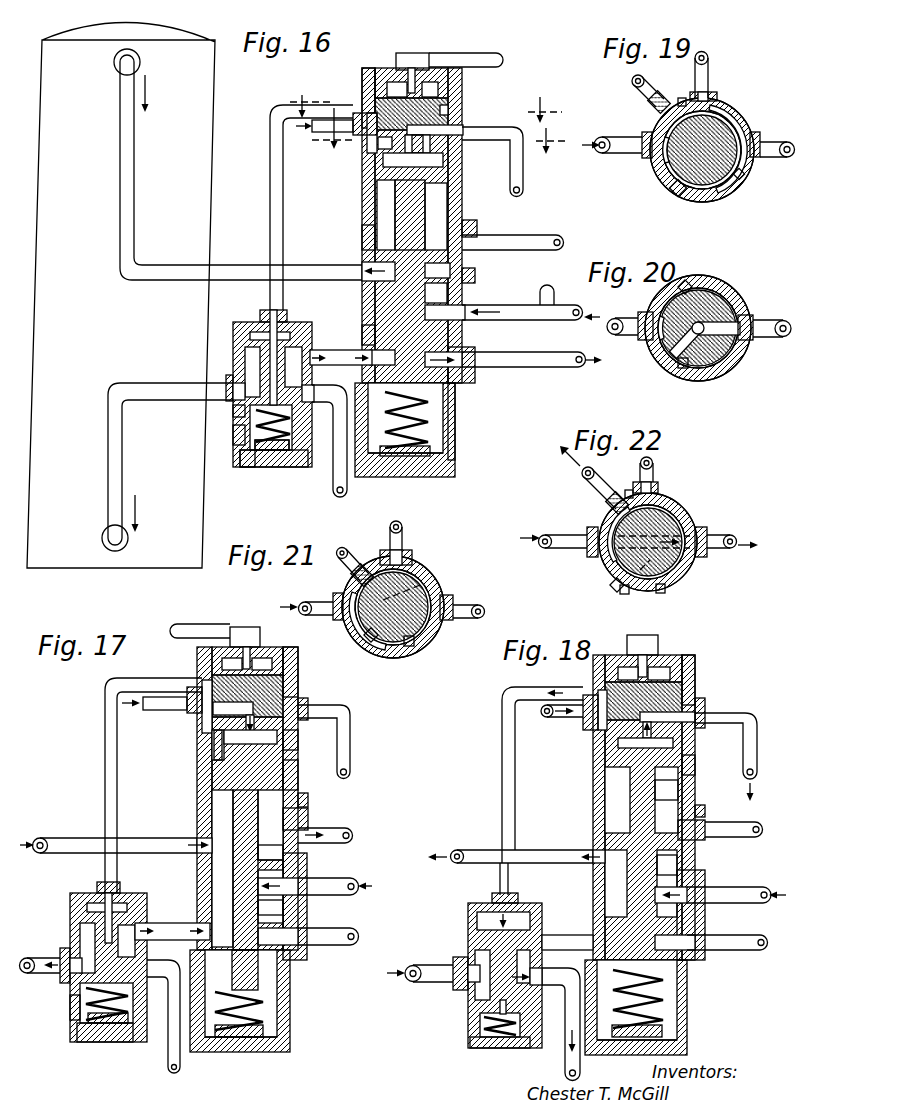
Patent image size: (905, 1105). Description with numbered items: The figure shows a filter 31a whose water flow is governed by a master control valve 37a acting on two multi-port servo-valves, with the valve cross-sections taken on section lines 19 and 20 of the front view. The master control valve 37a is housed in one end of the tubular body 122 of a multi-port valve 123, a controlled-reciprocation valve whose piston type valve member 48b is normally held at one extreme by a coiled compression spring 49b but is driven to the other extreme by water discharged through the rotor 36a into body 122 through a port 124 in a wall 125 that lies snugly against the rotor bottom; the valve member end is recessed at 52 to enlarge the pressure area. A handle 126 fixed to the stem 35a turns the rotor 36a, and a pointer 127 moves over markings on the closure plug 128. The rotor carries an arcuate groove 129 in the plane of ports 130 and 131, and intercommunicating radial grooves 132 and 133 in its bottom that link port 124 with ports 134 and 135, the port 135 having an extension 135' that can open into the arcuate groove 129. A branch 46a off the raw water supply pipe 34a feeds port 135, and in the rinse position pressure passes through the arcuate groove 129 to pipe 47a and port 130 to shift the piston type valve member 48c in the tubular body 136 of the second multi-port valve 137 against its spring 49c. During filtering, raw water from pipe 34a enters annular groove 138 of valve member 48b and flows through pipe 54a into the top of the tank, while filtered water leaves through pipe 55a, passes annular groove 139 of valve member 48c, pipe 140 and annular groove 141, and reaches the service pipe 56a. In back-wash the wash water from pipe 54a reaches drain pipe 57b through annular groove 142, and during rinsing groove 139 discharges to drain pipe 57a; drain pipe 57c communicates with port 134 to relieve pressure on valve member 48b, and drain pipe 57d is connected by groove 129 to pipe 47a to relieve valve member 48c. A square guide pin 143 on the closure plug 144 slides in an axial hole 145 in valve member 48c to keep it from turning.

In FIG. 16, the section line 19— 19 is at (420, 105).
In FIG. 16, the section line 20— 20 is at (437, 131).
In FIG. 16, the filter 31a is at (203, 233).
In FIG. 16, the raw water supply pipe 34a is at (527, 311).
In FIG. 17, the raw water supply pipe 34a is at (335, 885).
In FIG. 18, the raw water supply pipe 34a is at (732, 896).
In FIG. 16, the stem 35a is at (418, 74).
In FIG. 16, the rotor 36a is at (461, 93).
In FIG. 19, the rotor 36a is at (716, 186).
In FIG. 20, the rotor 36a is at (718, 371).
In FIG. 21, the rotor 36a is at (433, 638).
In FIG. 22, the rotor 36a is at (680, 581).
In FIG. 17, the rotor 36a is at (299, 680).
In FIG. 18, the rotor 36a is at (666, 661).
In FIG. 16, the master control valve 37a is at (373, 98).
In FIG. 19, the master control valve 37a is at (745, 113).
In FIG. 20, the master control valve 37a is at (721, 286).
In FIG. 21, the master control valve 37a is at (432, 568).
In FIG. 22, the master control valve 37a is at (682, 498).
In FIG. 17, the master control valve 37a is at (301, 691).
In FIG. 18, the master control valve 37a is at (698, 678).
In FIG. 16, the branch pipe 46a is at (317, 131).
In FIG. 19, the branch pipe 46a is at (620, 155).
In FIG. 20, the branch pipe 46a is at (622, 338).
In FIG. 21, the branch pipe 46a is at (315, 603).
In FIG. 22, the branch pipe 46a is at (556, 551).
In FIG. 17, the branch pipe 46a is at (146, 711).
In FIG. 18, the branch pipe 46a is at (559, 719).
In FIG. 16, the pipe 47a is at (284, 213).
In FIG. 19, the pipe 47a is at (646, 96).
In FIG. 22, the pipe 47a is at (590, 484).
In FIG. 17, the pipe 47a is at (107, 742).
In FIG. 18, the pipe 47a is at (500, 741).
In FIG. 16, the piston type valve member 48b is at (457, 384).
In FIG. 17, the piston type valve member 48b is at (303, 780).
In FIG. 18, the piston type valve member 48b is at (682, 766).
In FIG. 16, the piston type valve member 48c is at (300, 336).
In FIG. 17, the piston type valve member 48c is at (104, 897).
In FIG. 18, the piston type valve member 48c is at (470, 1014).
In FIG. 16, the coiled compression spring 49b is at (413, 450).
In FIG. 17, the coiled compression spring 49b is at (222, 1042).
In FIG. 18, the coiled compression spring 49b is at (667, 999).
In FIG. 16, the spring 49c is at (259, 461).
In FIG. 17, the spring 49c is at (78, 1040).
In FIG. 18, the spring 49c is at (480, 1049).
In FIG. 16, the recessed end 52 is at (395, 180).
In FIG. 17, the recessed end 52 is at (118, 902).
In FIG. 16, the pipe 54a is at (130, 197).
In FIG. 17, the pipe 54a is at (70, 850).
In FIG. 18, the pipe 54a is at (538, 850).
In FIG. 16, the pipe 55a is at (124, 460).
In FIG. 17, the pipe 55a is at (45, 958).
In FIG. 18, the pipe 55a is at (422, 965).
In FIG. 16, the service pipe 56a is at (521, 369).
In FIG. 17, the service pipe 56a is at (323, 947).
In FIG. 18, the service pipe 56a is at (727, 951).
In FIG. 16, the drain pipe 57a is at (329, 481).
In FIG. 17, the drain pipe 57a is at (166, 1042).
In FIG. 18, the drain pipe 57a is at (562, 1052).
In FIG. 16, the drain pipe 57b is at (527, 241).
In FIG. 17, the drain pipe 57b is at (348, 840).
In FIG. 18, the drain pipe 57b is at (753, 838).
In FIG. 16, the drain pipe 57c is at (526, 178).
In FIG. 19, the drain pipe 57c is at (775, 147).
In FIG. 20, the drain pipe 57c is at (771, 331).
In FIG. 22, the drain pipe 57c is at (727, 537).
In FIG. 17, the drain pipe 57c is at (352, 714).
In FIG. 18, the drain pipe 57c is at (757, 714).
In FIG. 19, the drain pipe 57d is at (710, 68).
In FIG. 21, the drain pipe 57d is at (404, 540).
In FIG. 22, the drain pipe 57d is at (656, 470).
In FIG. 16, the tubular body 122 is at (364, 237).
In FIG. 19, the tubular body 122 is at (680, 190).
In FIG. 20, the tubular body 122 is at (691, 280).
In FIG. 22, the tubular body 122 is at (617, 586).
In FIG. 16, the multi-port valve 123 is at (465, 213).
In FIG. 17, the multi-port valve 123 is at (197, 796).
In FIG. 16, the port 124 is at (390, 164).
In FIG. 20, the port 124 is at (683, 369).
In FIG. 21, the port 124 is at (411, 646).
In FIG. 22, the port 124 is at (661, 590).
In FIG. 17, the port 124 is at (240, 733).
In FIG. 18, the port 124 is at (689, 749).
In FIG. 16, the wall 125 is at (386, 138).
In FIG. 17, the wall 125 is at (299, 741).
In FIG. 16, the handle 126 is at (474, 56).
In FIG. 17, the handle 126 is at (190, 633).
In FIG. 16, the pointer 127 is at (405, 45).
In FIG. 16, the closure plug 128 is at (459, 76).
In FIG. 19, the closure plug 128 is at (742, 179).
In FIG. 16, the arcuate groove 129 is at (449, 112).
In FIG. 21, the arcuate groove 129 is at (372, 637).
In FIG. 22, the arcuate groove 129 is at (625, 591).
In FIG. 18, the arcuate groove 129 is at (625, 660).
In FIG. 19, the port 130 is at (683, 98).
In FIG. 22, the port 130 is at (628, 490).
In FIG. 19, the port 131 is at (712, 101).
In FIG. 16, the radial groove 132 is at (446, 153).
In FIG. 20, the radial groove 132 is at (721, 346).
In FIG. 21, the radial groove 132 is at (370, 565).
In FIG. 17, the radial groove 132 is at (212, 722).
In FIG. 20, the radial groove 133 is at (672, 356).
In FIG. 21, the radial groove 133 is at (448, 589).
In FIG. 22, the radial groove 133 is at (694, 569).
In FIG. 18, the radial groove 133 is at (690, 702).
In FIG. 16, the port 134 is at (466, 136).
In FIG. 20, the port 134 is at (740, 337).
In FIG. 22, the port 134 is at (700, 521).
In FIG. 16, the port 135 is at (342, 108).
In FIG. 20, the port 135 is at (631, 314).
In FIG. 17, the port 135 is at (167, 721).
In FIG. 18, the port 135 is at (578, 734).
In FIG. 16, the port extension 135' is at (358, 94).
In FIG. 19, the port extension 135' is at (639, 176).
In FIG. 21, the port extension 135' is at (349, 623).
In FIG. 22, the port extension 135' is at (595, 556).
In FIG. 17, the port extension 135' is at (183, 691).
In FIG. 18, the port extension 135' is at (572, 699).
In FIG. 16, the tubular body 136 is at (235, 433).
In FIG. 17, the tubular body 136 is at (72, 1002).
In FIG. 16, the multi-port valve 137 is at (233, 362).
In FIG. 17, the multi-port valve 137 is at (70, 910).
In FIG. 18, the multi-port valve 137 is at (544, 920).
In FIG. 16, the annular groove 138 is at (440, 281).
In FIG. 17, the annular groove 138 is at (283, 912).
In FIG. 18, the annular groove 138 is at (690, 866).
In FIG. 16, the annular groove 139 is at (264, 322).
In FIG. 17, the annular groove 139 is at (76, 936).
In FIG. 18, the annular groove 139 is at (480, 960).
In FIG. 16, the pipe 140 is at (341, 357).
In FIG. 17, the pipe 140 is at (160, 923).
In FIG. 16, the annular groove 141 is at (375, 333).
In FIG. 17, the annular groove 141 is at (272, 850).
In FIG. 18, the annular groove 142 is at (670, 792).
In FIG. 16, the guide pin 143 is at (271, 452).
In FIG. 16, the closure plug 144 is at (246, 453).
In FIG. 16, the axial hole 145 is at (235, 413).